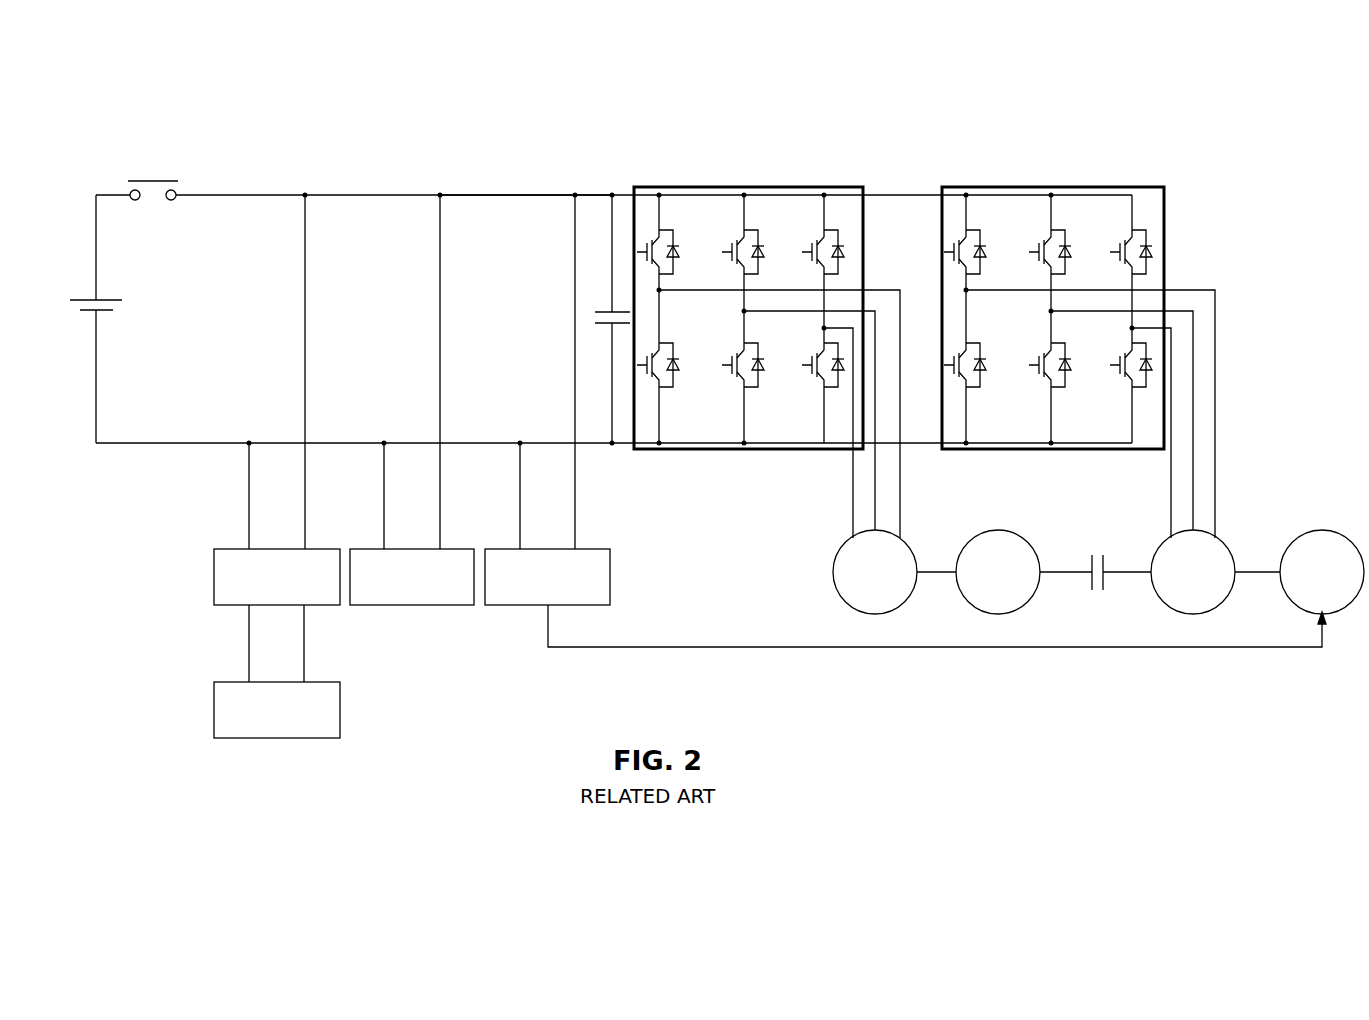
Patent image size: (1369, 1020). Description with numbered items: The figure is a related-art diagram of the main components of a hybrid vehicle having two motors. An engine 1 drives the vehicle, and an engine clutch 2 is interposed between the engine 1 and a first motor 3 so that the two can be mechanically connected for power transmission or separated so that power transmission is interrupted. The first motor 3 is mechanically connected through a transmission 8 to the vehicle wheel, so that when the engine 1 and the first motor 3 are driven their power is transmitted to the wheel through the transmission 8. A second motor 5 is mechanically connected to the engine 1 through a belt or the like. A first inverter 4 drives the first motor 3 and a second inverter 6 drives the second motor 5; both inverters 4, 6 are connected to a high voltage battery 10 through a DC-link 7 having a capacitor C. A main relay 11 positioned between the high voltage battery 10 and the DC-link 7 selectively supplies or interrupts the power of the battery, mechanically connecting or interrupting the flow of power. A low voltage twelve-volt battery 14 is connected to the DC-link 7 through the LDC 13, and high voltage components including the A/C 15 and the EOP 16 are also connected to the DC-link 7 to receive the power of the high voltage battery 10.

The engine 1 is at (980, 532).
The engine clutch 2 is at (1088, 555).
The first motor 3 is at (1228, 542).
The first inverter 4 is at (1005, 187).
The second motor 5 is at (836, 549).
The second inverter 6 is at (705, 187).
The DC-link 7 is at (511, 195).
The transmission 8 is at (1328, 530).
The high voltage battery 10 is at (87, 300).
The main relay 11 is at (160, 181).
The LDC 13 is at (214, 580).
The low voltage battery 14 is at (214, 705).
The A/C 15 is at (407, 605).
The EOP 16 is at (515, 605).
The capacitor C is at (607, 312).